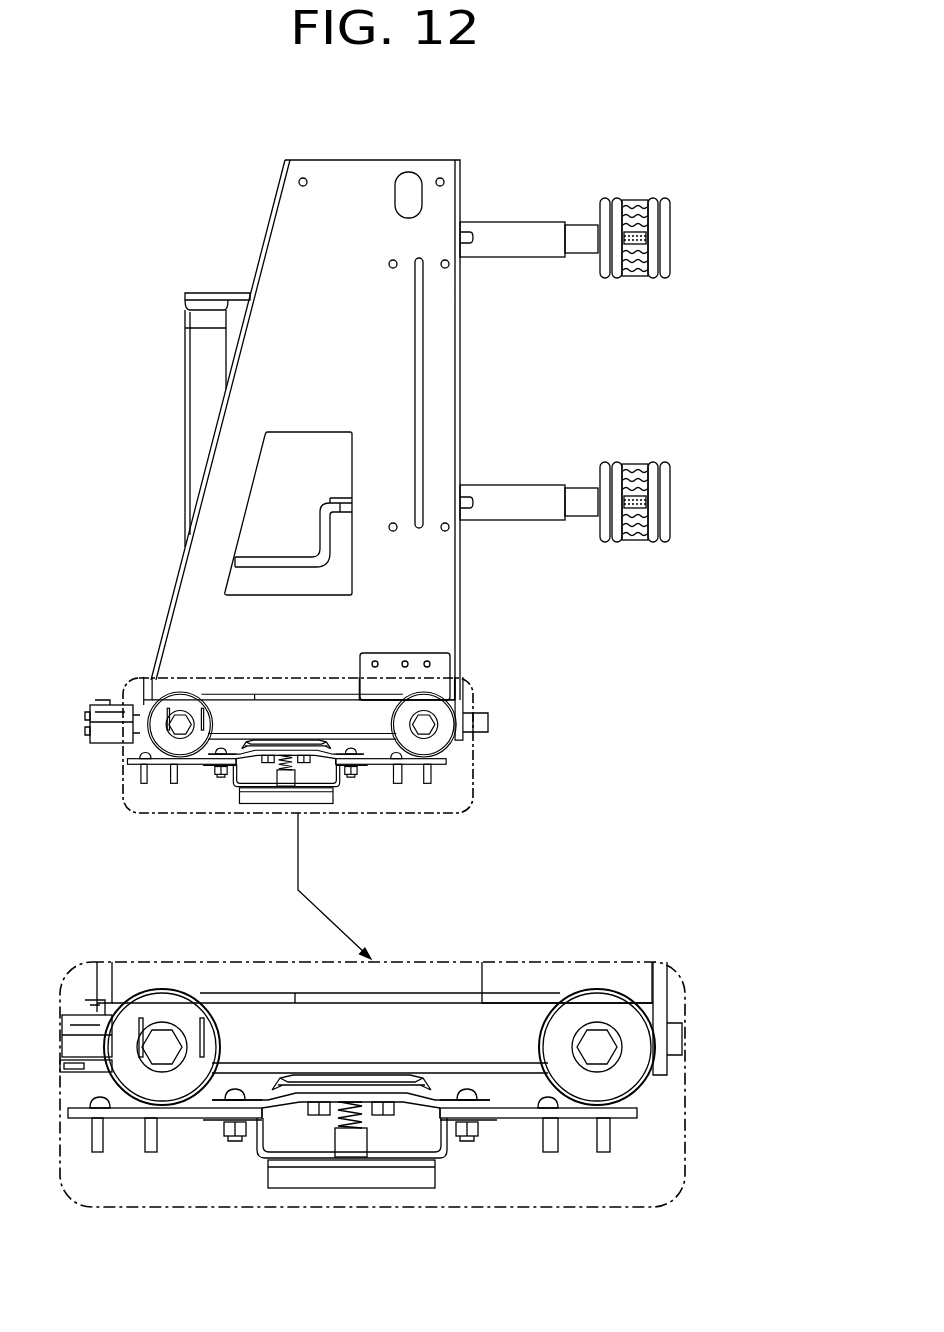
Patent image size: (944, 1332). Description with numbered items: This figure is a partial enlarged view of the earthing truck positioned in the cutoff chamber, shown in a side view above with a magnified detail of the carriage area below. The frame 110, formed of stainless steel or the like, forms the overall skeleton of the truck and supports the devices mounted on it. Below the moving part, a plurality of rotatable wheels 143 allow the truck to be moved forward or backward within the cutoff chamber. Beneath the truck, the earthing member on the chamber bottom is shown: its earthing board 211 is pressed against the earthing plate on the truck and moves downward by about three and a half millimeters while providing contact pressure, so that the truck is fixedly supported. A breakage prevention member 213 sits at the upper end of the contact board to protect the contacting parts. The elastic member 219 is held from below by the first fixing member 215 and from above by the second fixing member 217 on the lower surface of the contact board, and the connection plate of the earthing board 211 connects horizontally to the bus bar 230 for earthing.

The frame 110 is at (278, 232).
The wheel 143 is at (162, 1000).
The breakage prevention member 213 is at (387, 1080).
The earthing board 211 is at (452, 1104).
The elastic member 219 is at (350, 1128).
The second fixing member 217 is at (363, 1108).
The first fixing member 215 is at (305, 1187).
The bus bar 230 is at (522, 1113).